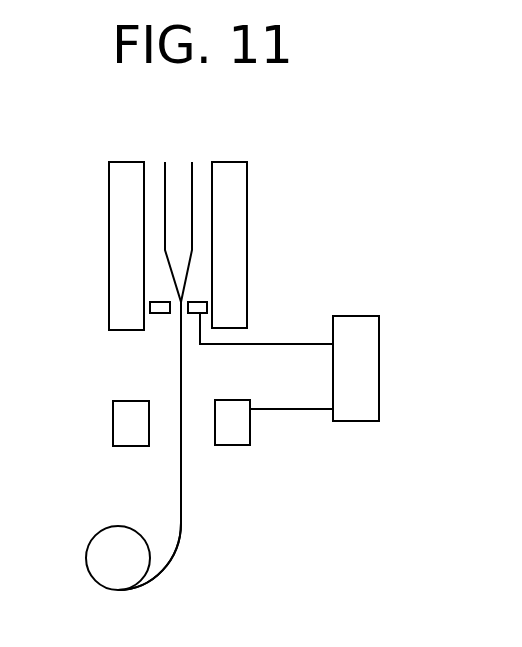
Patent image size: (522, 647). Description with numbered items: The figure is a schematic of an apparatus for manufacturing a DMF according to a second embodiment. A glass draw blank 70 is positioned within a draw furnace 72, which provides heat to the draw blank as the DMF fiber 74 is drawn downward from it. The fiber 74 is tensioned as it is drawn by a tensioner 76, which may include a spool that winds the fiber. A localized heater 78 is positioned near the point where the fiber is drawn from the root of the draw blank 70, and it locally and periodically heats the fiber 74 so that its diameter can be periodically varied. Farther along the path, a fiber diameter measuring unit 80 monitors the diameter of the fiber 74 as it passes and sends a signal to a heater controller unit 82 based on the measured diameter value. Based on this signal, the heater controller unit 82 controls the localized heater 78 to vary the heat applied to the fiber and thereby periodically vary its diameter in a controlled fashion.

The glass draw blank 70 is at (185, 178).
The draw furnace 72 is at (247, 238).
The DMF fiber 74 is at (183, 512).
The tensioner 76 is at (110, 562).
The localized heater 78 is at (160, 313).
The fiber diameter measuring unit 80 is at (250, 427).
The heater controller unit 82 is at (380, 355).